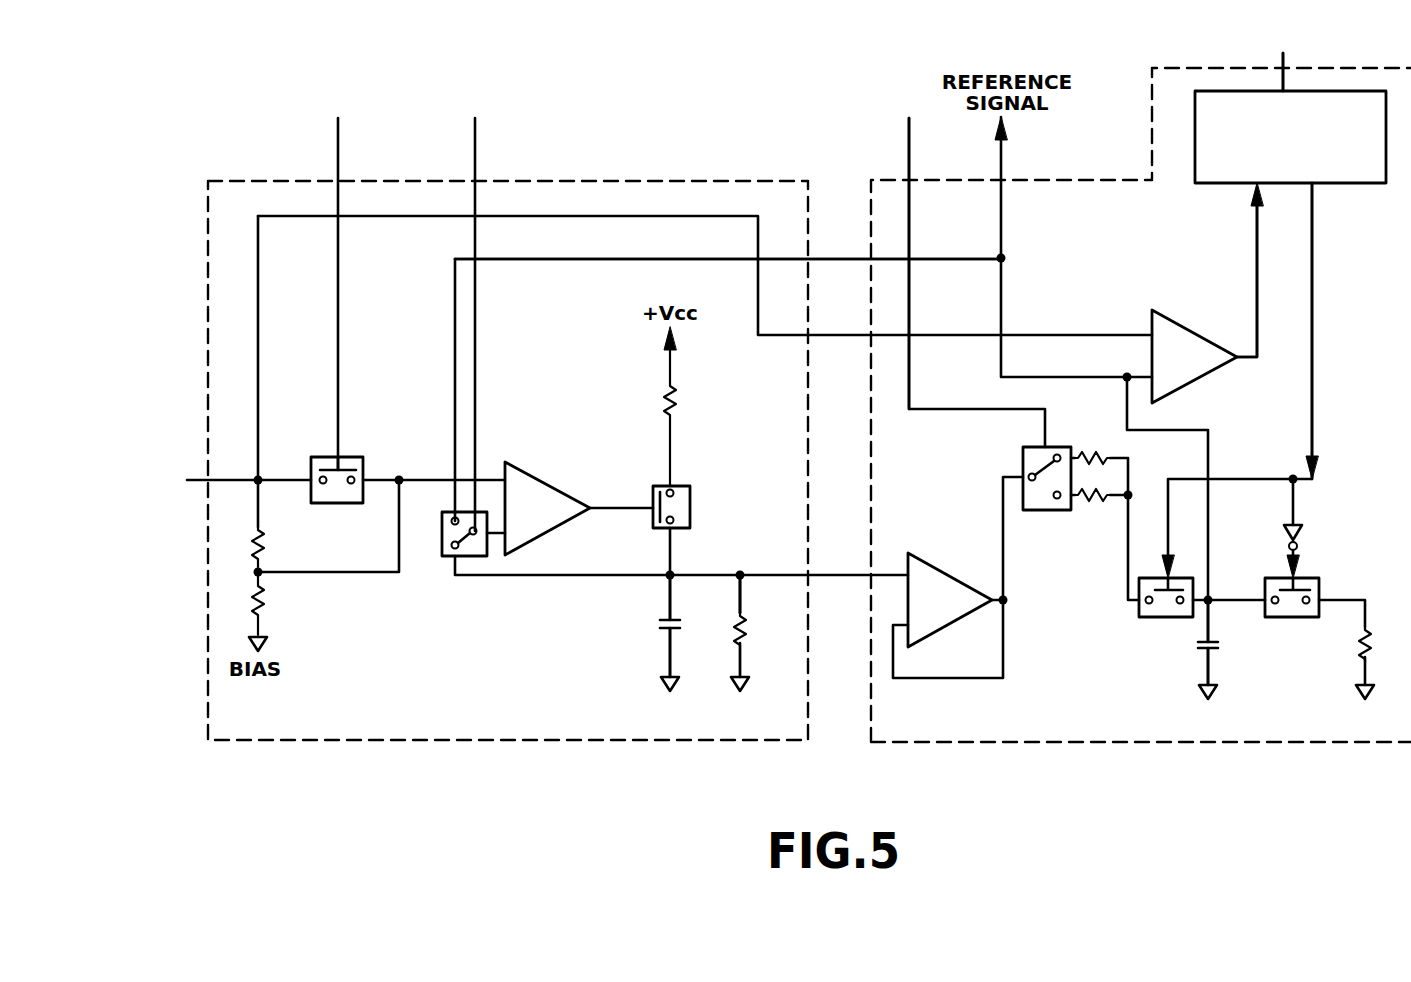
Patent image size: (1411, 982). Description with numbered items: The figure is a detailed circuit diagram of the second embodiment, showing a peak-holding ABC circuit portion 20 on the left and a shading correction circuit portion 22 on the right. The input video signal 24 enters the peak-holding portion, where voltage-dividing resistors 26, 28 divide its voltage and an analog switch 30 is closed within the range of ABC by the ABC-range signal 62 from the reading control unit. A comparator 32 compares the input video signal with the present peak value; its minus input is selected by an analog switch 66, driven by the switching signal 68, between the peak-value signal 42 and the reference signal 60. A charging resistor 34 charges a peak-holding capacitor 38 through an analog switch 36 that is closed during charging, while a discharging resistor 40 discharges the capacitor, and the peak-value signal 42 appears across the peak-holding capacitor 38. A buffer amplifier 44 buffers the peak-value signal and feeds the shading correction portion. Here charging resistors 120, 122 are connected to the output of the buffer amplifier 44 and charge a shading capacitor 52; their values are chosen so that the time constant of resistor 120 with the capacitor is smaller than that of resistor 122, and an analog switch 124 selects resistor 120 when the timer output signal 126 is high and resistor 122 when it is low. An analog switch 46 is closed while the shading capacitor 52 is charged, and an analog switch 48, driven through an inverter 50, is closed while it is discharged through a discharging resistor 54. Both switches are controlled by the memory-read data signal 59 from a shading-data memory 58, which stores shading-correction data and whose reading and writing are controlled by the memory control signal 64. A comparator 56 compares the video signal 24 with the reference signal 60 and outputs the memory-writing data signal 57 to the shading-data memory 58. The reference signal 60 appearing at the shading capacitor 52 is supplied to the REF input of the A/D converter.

The peak-holding ABC circuit portion 20 is at (608, 180).
The shading correction circuit portion 22 is at (1058, 742).
The input video signal 24 is at (140, 450).
The voltage-dividing resistor 26 is at (264, 543).
The voltage-dividing resistor 28 is at (264, 598).
The analog switch 30 is at (363, 460).
The comparator 32 is at (540, 468).
The charging resistor 34 is at (676, 400).
The analog switch 36 is at (690, 490).
The peak-holding capacitor 38 is at (657, 622).
The discharging resistor 40 is at (733, 628).
The peak-value signal 42 is at (740, 575).
The buffer amplifier 44 is at (932, 566).
The analog switch 46 is at (1150, 617).
The analog switch 48 is at (1319, 578).
The inverter 50 is at (1300, 522).
The shading capacitor 52 is at (1220, 645).
The discharging resistor 54 is at (1358, 640).
The comparator 56 is at (1178, 318).
The memory-writing data signal 57 is at (1257, 248).
The shading-data memory 58 is at (1360, 183).
The memory-read data signal 59 is at (1312, 355).
The reference signal 60 is at (1001, 258).
The ABC-range signal 62 is at (338, 160).
The memory control signal 64 is at (1283, 60).
The analog switch 66 is at (470, 558).
The switching signal 68 is at (475, 160).
The charging resistor 120 is at (1091, 455).
The charging resistor 122 is at (1091, 500).
The analog switch 124 is at (1023, 449).
The timer output signal 126 is at (909, 158).